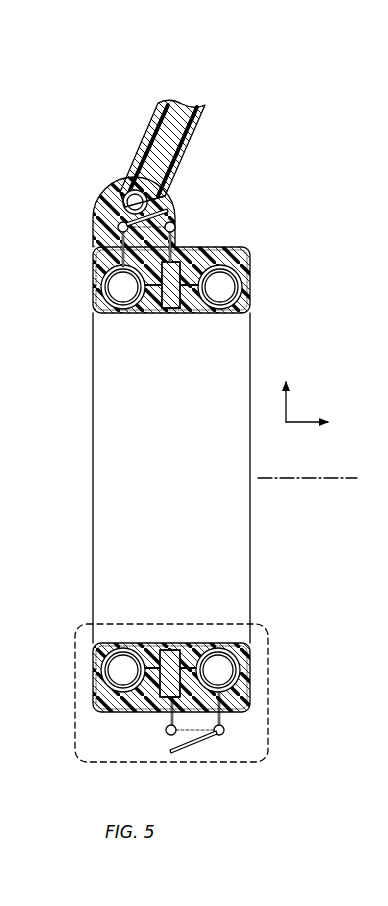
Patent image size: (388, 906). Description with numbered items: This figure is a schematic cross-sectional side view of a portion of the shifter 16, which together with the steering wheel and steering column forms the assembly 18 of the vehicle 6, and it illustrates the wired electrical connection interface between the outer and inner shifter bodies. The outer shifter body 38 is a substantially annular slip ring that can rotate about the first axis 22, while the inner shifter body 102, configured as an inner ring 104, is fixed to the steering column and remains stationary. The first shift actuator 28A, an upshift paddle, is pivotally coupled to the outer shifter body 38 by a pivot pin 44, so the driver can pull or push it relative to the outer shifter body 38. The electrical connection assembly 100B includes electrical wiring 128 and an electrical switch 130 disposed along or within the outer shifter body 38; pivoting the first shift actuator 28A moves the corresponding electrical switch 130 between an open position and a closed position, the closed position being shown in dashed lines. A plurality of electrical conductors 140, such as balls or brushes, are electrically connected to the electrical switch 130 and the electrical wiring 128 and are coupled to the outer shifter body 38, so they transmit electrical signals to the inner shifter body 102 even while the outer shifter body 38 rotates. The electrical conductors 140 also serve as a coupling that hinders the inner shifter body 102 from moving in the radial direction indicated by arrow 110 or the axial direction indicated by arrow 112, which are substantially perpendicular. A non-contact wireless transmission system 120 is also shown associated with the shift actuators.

The vehicle 6 is at (268, 712).
The shifter 16 is at (150, 115).
The assembly 18 is at (72, 140).
The first axis 22 is at (307, 480).
The first shift actuator 28A is at (135, 146).
The outer shifter body 38 is at (218, 247).
The pivot pin 44 is at (107, 190).
The electrical connection assembly 100B is at (83, 285).
The inner shifter body 102 is at (252, 303).
The inner ring 104 is at (123, 313).
The arrow (third or radial direction) 110 is at (287, 407).
The arrow (fourth or axial direction) 112 is at (302, 423).
The non-contact wireless transmission system 120 is at (257, 285).
The electrical wiring 128 is at (178, 222).
The electrical switch 130 is at (162, 209).
The electrical conductors 140 is at (125, 645).